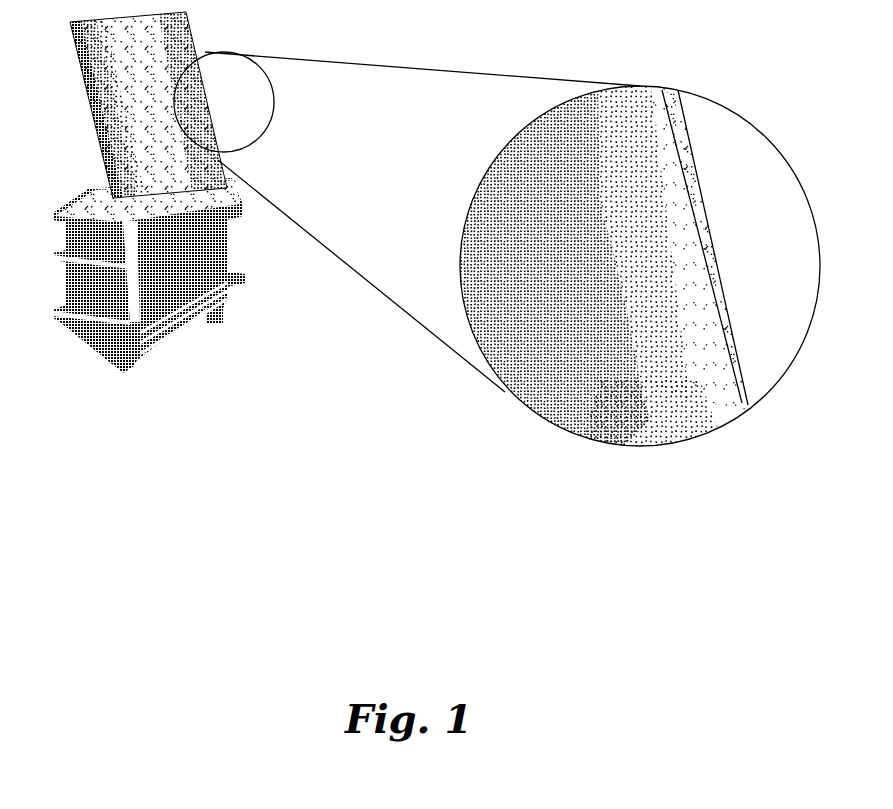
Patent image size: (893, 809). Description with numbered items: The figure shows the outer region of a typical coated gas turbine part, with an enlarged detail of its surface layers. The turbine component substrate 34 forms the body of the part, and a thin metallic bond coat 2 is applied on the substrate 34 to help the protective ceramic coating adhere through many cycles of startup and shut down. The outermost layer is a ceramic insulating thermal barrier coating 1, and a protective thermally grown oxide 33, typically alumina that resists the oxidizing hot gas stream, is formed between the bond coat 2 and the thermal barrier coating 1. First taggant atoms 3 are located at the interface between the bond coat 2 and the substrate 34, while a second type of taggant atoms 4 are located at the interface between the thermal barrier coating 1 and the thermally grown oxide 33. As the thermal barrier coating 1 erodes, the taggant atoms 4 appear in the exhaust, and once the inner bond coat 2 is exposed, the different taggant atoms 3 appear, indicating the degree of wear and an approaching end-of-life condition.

The turbine component substrate 34 is at (92, 113).
The thermally grown oxide 33 is at (600, 125).
The thermal barrier coating 1 is at (663, 168).
The second type of taggant atoms 4 is at (643, 250).
The bond coat 2 is at (643, 375).
The first taggant atoms 3 is at (635, 413).